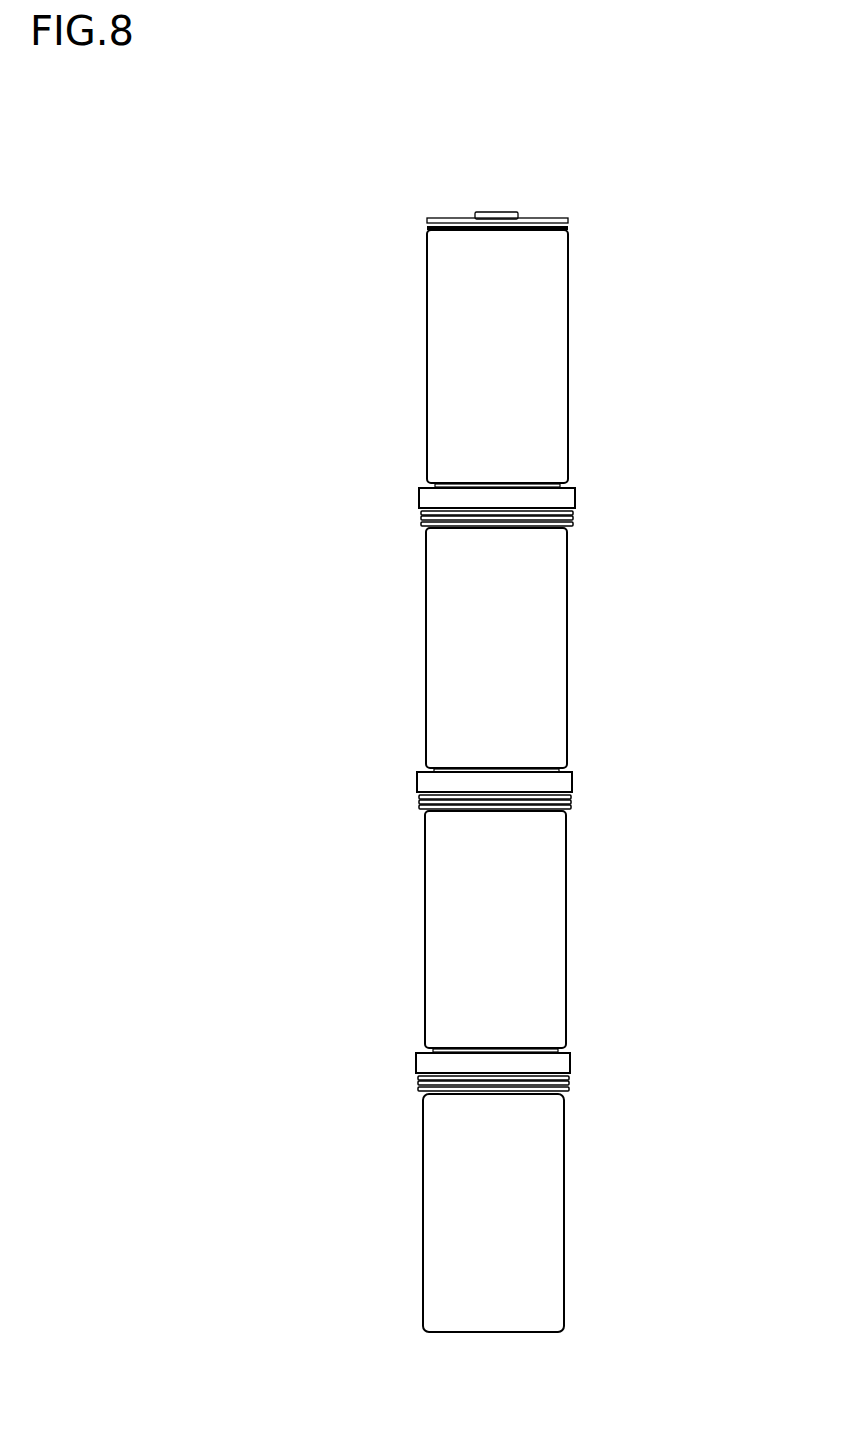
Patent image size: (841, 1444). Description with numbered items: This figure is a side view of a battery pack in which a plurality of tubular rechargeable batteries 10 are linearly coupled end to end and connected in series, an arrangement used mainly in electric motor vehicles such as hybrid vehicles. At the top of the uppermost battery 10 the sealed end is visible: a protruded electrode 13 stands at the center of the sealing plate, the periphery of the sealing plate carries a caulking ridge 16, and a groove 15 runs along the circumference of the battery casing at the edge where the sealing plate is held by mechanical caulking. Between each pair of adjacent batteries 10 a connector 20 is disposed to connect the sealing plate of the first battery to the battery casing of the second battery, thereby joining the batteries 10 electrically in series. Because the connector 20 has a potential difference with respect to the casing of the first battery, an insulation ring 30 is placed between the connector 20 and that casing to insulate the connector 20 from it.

The rechargeable battery 10 is at (538, 355).
The protruded electrode 13 is at (497, 212).
The groove 15 is at (412, 225).
The caulking ridge 16 is at (452, 218).
The connector 20 is at (558, 497).
The insulation ring 30 is at (531, 528).